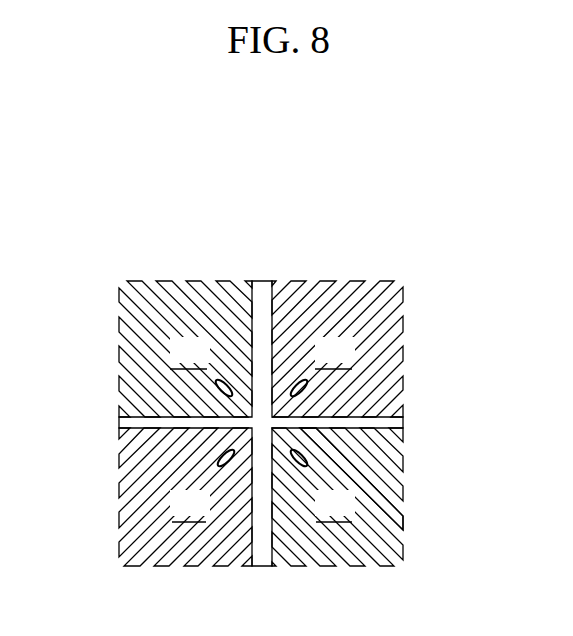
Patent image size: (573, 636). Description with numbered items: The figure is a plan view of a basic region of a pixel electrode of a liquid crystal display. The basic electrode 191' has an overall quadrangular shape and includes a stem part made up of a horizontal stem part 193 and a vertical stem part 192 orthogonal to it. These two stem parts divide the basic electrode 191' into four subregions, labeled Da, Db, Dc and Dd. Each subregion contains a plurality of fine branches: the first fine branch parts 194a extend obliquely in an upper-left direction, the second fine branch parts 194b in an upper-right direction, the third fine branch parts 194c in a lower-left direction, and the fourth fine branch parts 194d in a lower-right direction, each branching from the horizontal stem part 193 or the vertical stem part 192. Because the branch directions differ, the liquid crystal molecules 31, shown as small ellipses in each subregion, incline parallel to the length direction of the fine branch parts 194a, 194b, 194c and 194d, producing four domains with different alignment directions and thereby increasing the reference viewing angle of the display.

The basic electrode 191' is at (259, 374).
The vertical stem part 192 is at (272, 323).
The horizontal stem part 193 is at (313, 450).
The first fine branch parts 194a is at (203, 310).
The second fine branch parts 194b is at (370, 297).
The third fine branch parts 194c is at (158, 522).
The fourth fine branch parts 194d is at (373, 542).
The liquid crystal molecules 31 is at (304, 389).